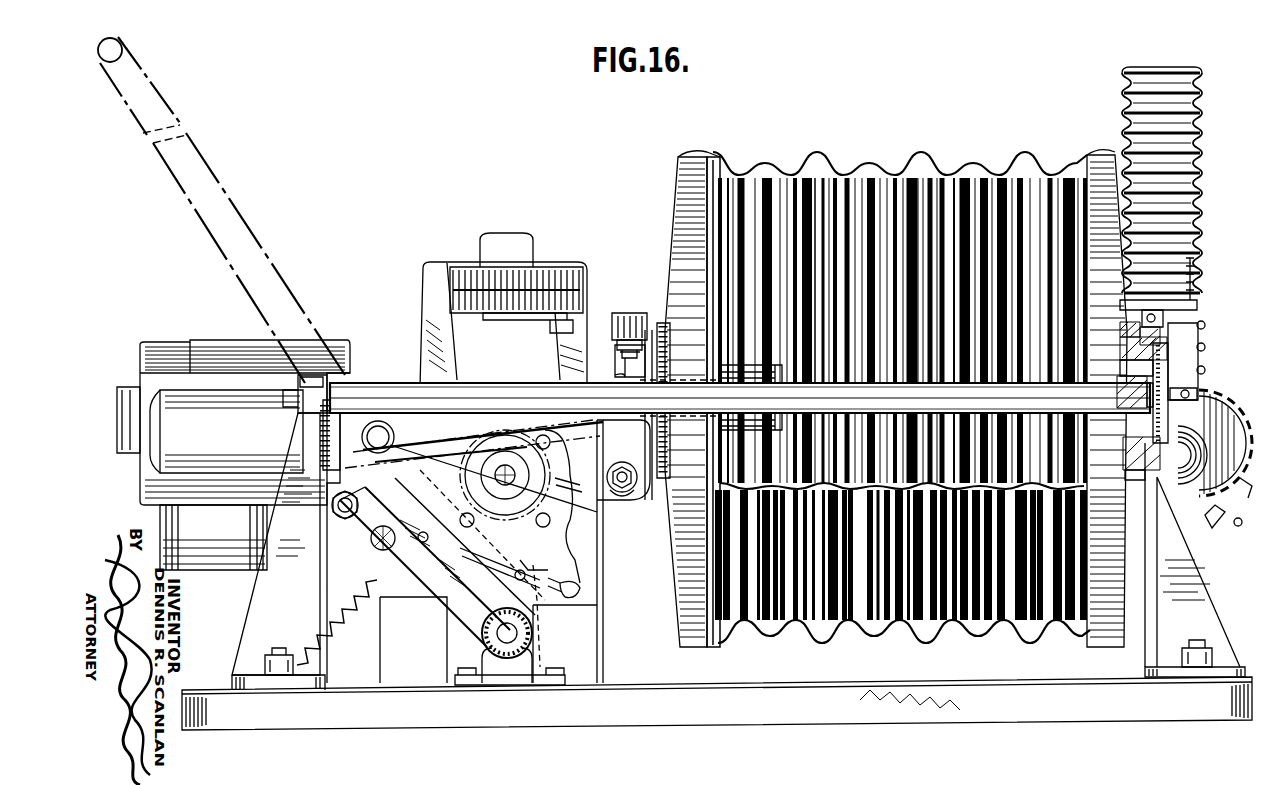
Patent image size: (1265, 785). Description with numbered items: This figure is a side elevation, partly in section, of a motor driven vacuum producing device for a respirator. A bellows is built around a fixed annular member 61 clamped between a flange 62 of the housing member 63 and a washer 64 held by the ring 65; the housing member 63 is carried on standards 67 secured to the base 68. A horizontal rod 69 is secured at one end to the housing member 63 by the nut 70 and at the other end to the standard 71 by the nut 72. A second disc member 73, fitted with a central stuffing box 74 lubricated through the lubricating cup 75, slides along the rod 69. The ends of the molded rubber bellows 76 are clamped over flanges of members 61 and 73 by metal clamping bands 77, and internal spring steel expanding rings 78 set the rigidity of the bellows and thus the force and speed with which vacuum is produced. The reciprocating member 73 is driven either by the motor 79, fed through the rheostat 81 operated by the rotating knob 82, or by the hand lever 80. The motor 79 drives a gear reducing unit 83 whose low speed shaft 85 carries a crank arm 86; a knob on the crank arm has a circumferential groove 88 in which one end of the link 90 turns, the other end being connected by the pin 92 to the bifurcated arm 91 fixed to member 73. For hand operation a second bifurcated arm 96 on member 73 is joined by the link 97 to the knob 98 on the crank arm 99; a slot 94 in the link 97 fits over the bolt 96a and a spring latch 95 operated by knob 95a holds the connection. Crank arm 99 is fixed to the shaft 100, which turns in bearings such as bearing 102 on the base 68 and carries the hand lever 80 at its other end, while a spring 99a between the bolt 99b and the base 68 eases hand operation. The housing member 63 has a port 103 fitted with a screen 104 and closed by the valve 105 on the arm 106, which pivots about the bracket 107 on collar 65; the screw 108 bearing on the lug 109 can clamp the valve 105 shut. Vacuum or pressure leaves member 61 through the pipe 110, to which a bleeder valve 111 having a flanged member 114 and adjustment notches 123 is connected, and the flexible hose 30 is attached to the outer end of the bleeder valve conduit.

The flexible hose 30 is at (1196, 150).
The fixed annular member 61 is at (1095, 183).
The flange 62 is at (1128, 330).
The housing member 63 is at (1126, 350).
The washer 64 is at (1142, 334).
The ring 65 is at (1125, 366).
The standards 67 is at (1175, 586).
The base 68 is at (933, 695).
The horizontal rod 69 is at (488, 385).
The nut 70 is at (1135, 420).
The standard 71 is at (285, 590).
The nut 72 is at (292, 390).
The second disc member 73 is at (690, 247).
The stuffing box 74 is at (735, 378).
The lubricating cup 75 is at (640, 318).
The molded rubber bellows 76 is at (882, 153).
The metal clamping bands 77 is at (696, 160).
The internal spring steel expanding rings 78 is at (895, 238).
The motor 79 is at (221, 350).
The hand lever 80 is at (250, 218).
The rheostat 81 is at (587, 290).
The rotating knob 82 is at (485, 247).
The gear reducing unit 83 is at (600, 520).
The low speed shaft 85 is at (515, 478).
The crank arm 86 is at (497, 447).
The circumferential groove 88 is at (365, 436).
The link 90 is at (520, 410).
The bifurcated arm 91 is at (622, 376).
The pin 92 is at (671, 404).
The slot 94 is at (580, 592).
The spring latch 95 is at (547, 605).
The knob 95a is at (577, 488).
The second bifurcated arm 96 is at (635, 494).
The bolt 96a is at (620, 500).
The link 97 is at (580, 444).
The knob 98 is at (368, 482).
The crank arm 99 is at (412, 596).
The spring 99a is at (338, 602).
The bolt 99b is at (392, 548).
The shaft 100 is at (507, 645).
The bearing 102 is at (535, 660).
The port 103 is at (1158, 475).
The screen 104 is at (1203, 412).
The valve 105 is at (1185, 470).
The arm 106 is at (1200, 357).
The bracket 107 is at (1206, 327).
The screw 108 is at (1193, 270).
The lug 109 is at (1195, 308).
The pipe 110 is at (1180, 520).
The bleeder valve 111 is at (1206, 530).
The flanged member 114 is at (1250, 498).
The notches 123 is at (1252, 524).